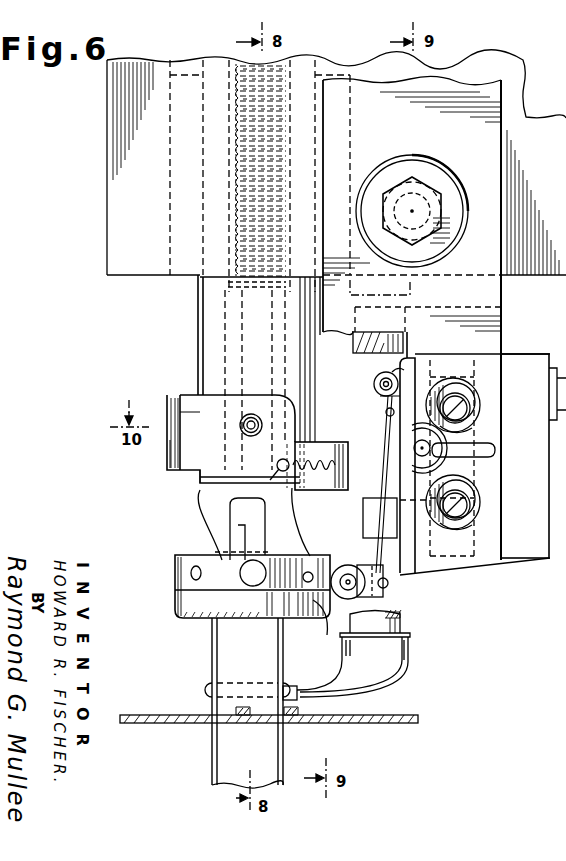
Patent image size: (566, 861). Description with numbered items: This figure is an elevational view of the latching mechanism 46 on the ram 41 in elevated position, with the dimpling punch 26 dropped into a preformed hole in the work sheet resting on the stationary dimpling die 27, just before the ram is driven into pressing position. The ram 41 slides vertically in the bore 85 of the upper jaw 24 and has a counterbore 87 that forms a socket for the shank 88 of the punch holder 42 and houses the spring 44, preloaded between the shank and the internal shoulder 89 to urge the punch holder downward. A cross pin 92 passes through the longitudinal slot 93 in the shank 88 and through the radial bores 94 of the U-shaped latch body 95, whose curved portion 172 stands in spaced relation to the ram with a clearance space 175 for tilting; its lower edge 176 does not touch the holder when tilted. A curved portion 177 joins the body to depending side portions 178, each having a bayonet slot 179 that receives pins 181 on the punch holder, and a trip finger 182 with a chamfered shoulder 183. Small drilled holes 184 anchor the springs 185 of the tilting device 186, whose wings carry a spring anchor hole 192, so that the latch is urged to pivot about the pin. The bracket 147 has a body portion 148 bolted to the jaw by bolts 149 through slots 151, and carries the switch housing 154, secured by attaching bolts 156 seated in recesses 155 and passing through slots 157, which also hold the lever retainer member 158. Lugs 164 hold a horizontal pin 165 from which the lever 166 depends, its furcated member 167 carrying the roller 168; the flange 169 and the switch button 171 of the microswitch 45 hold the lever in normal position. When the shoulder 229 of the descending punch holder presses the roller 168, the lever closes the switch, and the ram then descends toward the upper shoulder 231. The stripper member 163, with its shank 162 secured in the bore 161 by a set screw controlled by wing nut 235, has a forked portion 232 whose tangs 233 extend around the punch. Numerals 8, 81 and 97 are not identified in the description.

The base plate 8 is at (400, 715).
The upper jaw 24 is at (106, 155).
The dimpling punch 26 is at (212, 670).
The stationary dimpling die 27 is at (260, 755).
The ram 41 is at (200, 290).
The punch holder 42 is at (177, 600).
The spring 44 is at (234, 176).
The microswitch 45 is at (512, 372).
The latching mechanism 46 is at (140, 532).
The washer 81 is at (236, 710).
The bore 85 is at (168, 162).
The counterbore 87 is at (292, 76).
The shank 88 is at (226, 322).
The internal shoulder 89 is at (238, 70).
The cross pin 92 is at (253, 440).
The longitudinal slot 93 is at (245, 455).
The radial bores 94 is at (251, 416).
The latch body 95 is at (198, 393).
The hidden recess 97 is at (182, 72).
The bracket 147 is at (523, 335).
The body portion 148 is at (432, 133).
The bolts 149 is at (434, 197).
The slots 151 is at (440, 247).
The switch housing 154 is at (405, 380).
The recesses 155 is at (478, 518).
The attaching bolts 156 is at (463, 507).
The slots 157 is at (470, 486).
The lever retainer member 158 is at (393, 540).
The bore 161 is at (352, 338).
The shank 162 is at (362, 348).
The stripper member 163 is at (418, 660).
The lugs 164 is at (392, 374).
The horizontal pin 165 is at (374, 385).
The lever 166 is at (386, 398).
The furcated member 167 is at (360, 597).
The roller 168 is at (358, 560).
The flange 169 is at (376, 472).
The switch button 171 is at (387, 414).
The curved portion 172 is at (172, 458).
The clearance space 175 is at (180, 412).
The lower edge 176 is at (200, 480).
The curved portion 177 is at (215, 486).
The depending side portions 178 is at (210, 516).
The bayonet slot 179 is at (244, 545).
The pins 181 is at (251, 575).
The trip finger 182 is at (300, 563).
The chamfered shoulder 183 is at (302, 560).
The drilled holes 184 is at (278, 470).
The springs 185 is at (338, 490).
The tilting device 186 is at (310, 498).
The spring anchor hole 192 is at (349, 462).
The shoulder 229 is at (317, 608).
The upper shoulder 231 is at (205, 548).
The forked portion 232 is at (302, 697).
The tangs 233 is at (208, 690).
The wing nut 235 is at (496, 452).